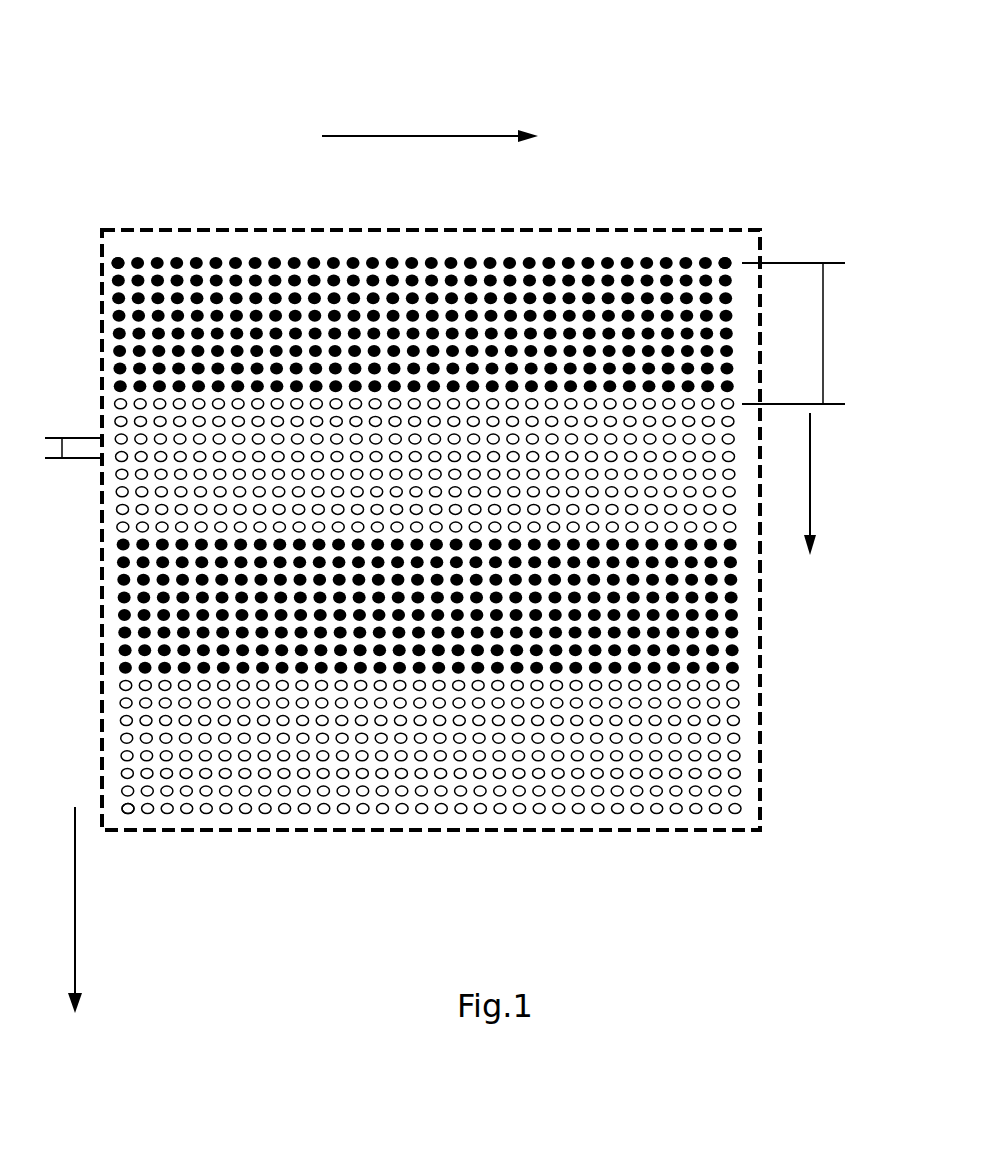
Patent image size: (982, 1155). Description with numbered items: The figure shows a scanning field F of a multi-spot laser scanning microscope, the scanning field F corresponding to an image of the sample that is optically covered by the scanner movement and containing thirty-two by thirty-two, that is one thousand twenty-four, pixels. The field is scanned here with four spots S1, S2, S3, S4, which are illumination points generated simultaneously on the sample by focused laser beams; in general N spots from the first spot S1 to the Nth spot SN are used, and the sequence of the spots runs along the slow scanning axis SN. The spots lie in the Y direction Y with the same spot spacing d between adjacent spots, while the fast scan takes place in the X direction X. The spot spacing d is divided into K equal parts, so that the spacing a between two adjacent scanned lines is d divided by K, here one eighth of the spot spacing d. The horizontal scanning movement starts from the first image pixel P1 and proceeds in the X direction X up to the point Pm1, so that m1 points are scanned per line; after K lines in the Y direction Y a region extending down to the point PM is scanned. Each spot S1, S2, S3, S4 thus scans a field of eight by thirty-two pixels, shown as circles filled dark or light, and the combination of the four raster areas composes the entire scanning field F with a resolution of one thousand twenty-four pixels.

The scanning field F is at (735, 832).
The first spot S1 is at (388, 311).
The second spot S2 is at (390, 456).
The third spot S3 is at (392, 592).
The fourth spot S4 is at (399, 730).
The first image pixel P1 is at (118, 257).
The last image pixel in X direction Pm1 is at (725, 263).
The last image pixel in Y direction PM is at (128, 812).
The X direction X is at (430, 105).
The Y direction Y is at (811, 507).
The Nth spot SN is at (101, 918).
The spot spacing d is at (793, 333).
The line spacing a is at (69, 459).